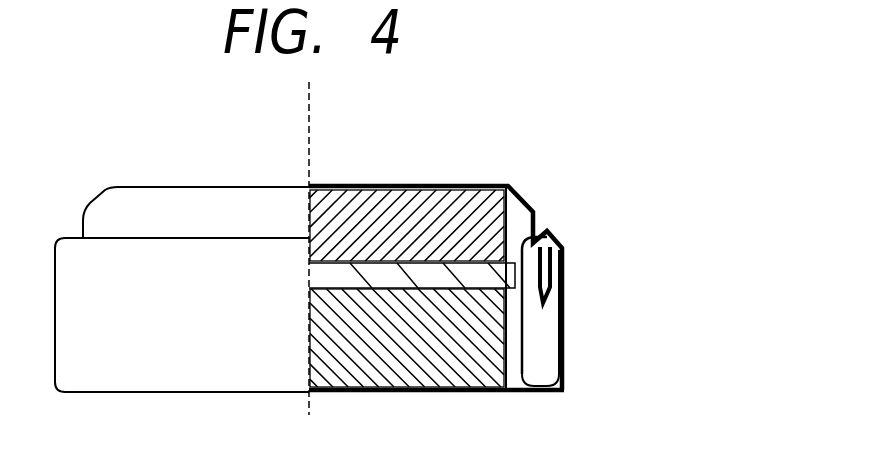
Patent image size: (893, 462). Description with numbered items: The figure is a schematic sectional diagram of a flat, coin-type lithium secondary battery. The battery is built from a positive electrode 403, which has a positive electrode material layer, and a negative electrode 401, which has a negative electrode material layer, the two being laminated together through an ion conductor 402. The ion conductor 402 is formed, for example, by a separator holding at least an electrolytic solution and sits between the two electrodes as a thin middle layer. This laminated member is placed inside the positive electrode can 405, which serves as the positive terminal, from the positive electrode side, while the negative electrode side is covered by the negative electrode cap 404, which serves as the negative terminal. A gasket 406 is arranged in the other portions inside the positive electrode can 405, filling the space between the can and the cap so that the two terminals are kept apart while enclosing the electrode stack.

The negative electrode 401 is at (473, 182).
The ion conductor 402 is at (330, 276).
The positive electrode 403 is at (450, 357).
The negative electrode cap 404 is at (368, 183).
The positive electrode can 405 is at (437, 395).
The gasket 406 is at (547, 330).